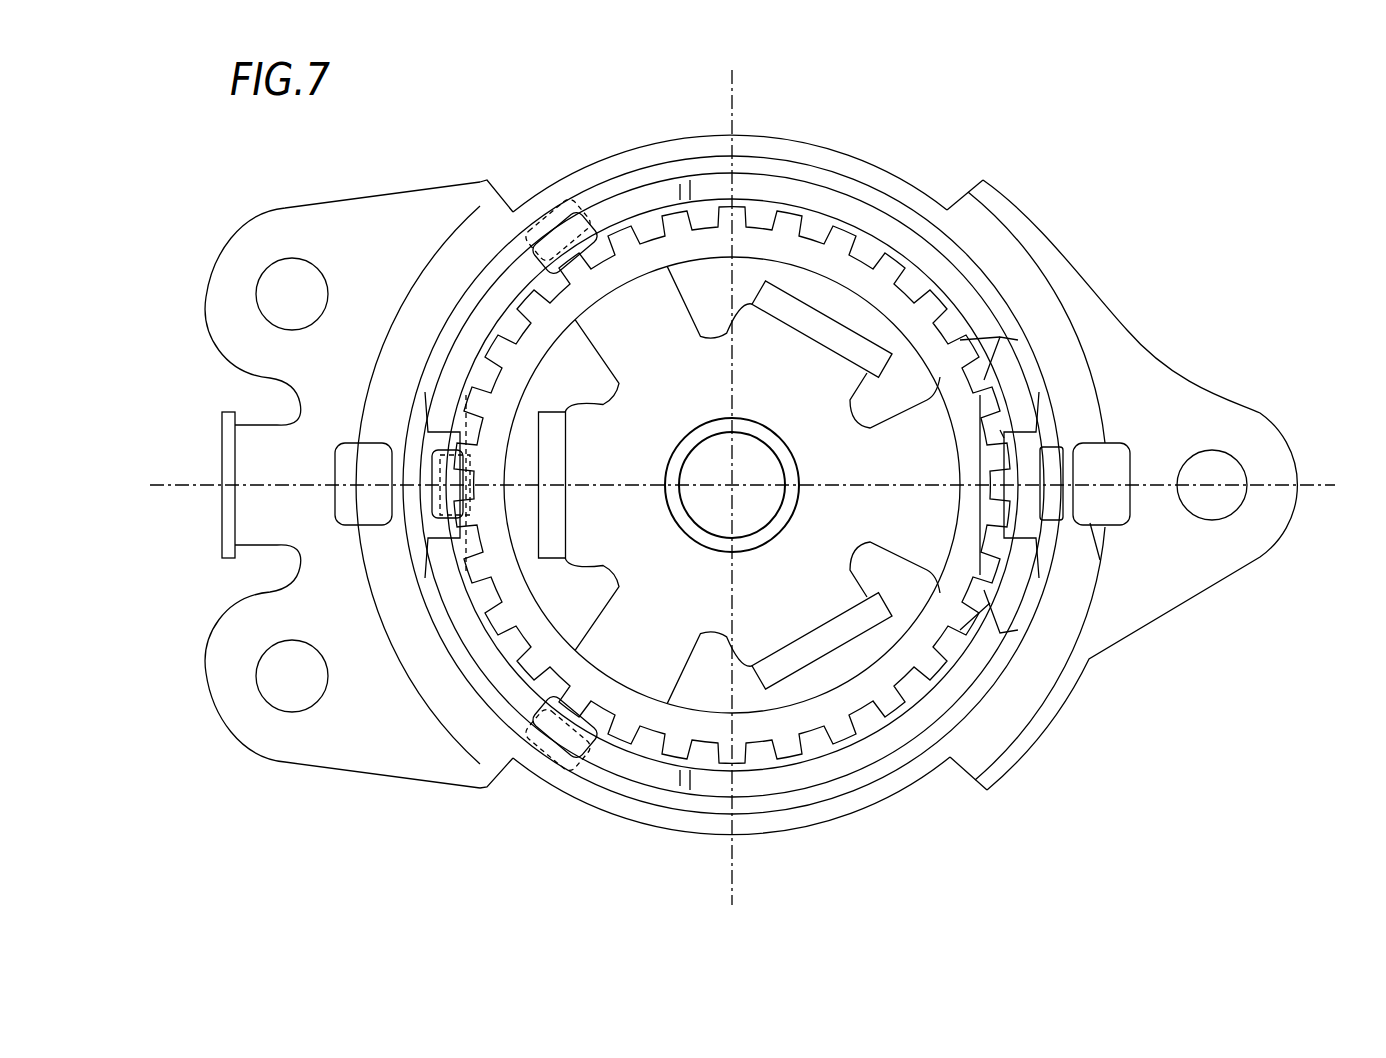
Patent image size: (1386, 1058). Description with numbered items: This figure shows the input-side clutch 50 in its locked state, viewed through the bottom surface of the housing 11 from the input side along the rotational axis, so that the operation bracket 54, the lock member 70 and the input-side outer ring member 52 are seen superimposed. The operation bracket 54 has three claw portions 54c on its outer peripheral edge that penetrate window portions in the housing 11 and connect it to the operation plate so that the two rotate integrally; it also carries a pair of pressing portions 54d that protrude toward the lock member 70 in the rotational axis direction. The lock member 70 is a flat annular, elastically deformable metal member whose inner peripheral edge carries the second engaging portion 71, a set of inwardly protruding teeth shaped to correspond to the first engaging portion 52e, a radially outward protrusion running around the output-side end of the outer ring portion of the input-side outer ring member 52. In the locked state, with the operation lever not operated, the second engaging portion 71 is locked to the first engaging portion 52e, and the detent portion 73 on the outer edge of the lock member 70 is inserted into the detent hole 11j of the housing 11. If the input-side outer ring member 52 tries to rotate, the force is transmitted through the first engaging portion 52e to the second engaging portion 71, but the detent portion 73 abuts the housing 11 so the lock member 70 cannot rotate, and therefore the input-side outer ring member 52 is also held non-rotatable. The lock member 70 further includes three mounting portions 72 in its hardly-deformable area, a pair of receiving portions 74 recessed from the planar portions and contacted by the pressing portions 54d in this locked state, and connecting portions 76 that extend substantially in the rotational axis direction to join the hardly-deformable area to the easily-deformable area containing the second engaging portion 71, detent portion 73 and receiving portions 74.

The input-side clutch 50 is at (1088, 130).
The housing 11 is at (1047, 230).
The detent hole 11j is at (1092, 523).
The lock member 70 is at (817, 180).
The second engaging portion 71 is at (1020, 410).
The mounting portions 72 is at (550, 205).
The detent portion 73 is at (1075, 500).
The connecting portions 76 is at (682, 182).
The input-side outer ring member 52 is at (766, 218).
The first engaging portion 52e is at (1000, 433).
The operation bracket 54 is at (734, 380).
The claw portions 54c is at (832, 325).
The pressing portions 54d is at (1000, 337).
The receiving portions 74 is at (859, 525).